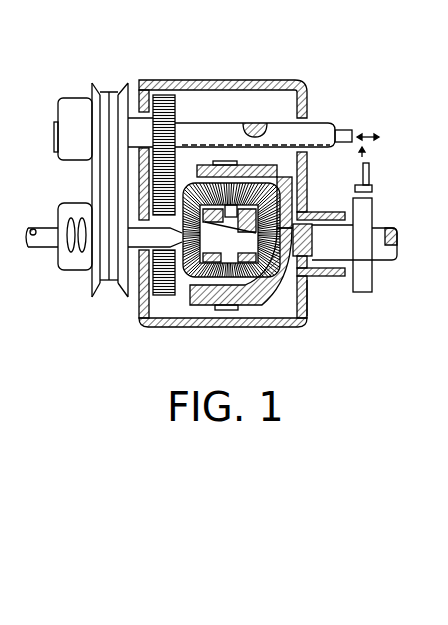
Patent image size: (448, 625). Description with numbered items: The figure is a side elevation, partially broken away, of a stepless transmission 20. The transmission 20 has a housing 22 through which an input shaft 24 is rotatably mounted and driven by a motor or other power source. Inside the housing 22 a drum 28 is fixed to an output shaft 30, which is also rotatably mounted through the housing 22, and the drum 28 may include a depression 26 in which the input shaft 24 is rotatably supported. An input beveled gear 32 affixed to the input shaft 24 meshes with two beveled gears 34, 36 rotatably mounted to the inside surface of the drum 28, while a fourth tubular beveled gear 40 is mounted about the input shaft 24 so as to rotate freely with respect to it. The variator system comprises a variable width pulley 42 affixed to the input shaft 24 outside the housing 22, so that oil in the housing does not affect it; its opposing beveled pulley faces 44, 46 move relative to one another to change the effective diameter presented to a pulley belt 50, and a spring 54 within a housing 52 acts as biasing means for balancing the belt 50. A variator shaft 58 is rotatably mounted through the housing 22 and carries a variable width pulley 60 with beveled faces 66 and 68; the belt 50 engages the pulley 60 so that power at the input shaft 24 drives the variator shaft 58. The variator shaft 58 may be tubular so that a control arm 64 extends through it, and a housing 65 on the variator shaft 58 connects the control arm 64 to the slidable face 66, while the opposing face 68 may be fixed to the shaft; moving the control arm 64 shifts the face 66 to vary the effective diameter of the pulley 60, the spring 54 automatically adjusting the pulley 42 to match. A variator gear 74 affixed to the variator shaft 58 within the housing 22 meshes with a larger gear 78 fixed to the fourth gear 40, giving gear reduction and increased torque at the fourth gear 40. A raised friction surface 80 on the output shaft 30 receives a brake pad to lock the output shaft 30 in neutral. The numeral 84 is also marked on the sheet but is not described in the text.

The transmission 20 is at (280, 77).
The housing 22 is at (167, 327).
The input shaft 24 is at (42, 235).
The depression 26 is at (302, 220).
The drum 28 is at (290, 297).
The output shaft 30 is at (385, 250).
The input beveled gear 32 is at (308, 274).
The beveled gear 34 is at (213, 312).
The beveled gear 36 is at (278, 178).
The fourth tubular beveled gear 40 is at (184, 292).
The variable width pulley 42 is at (92, 192).
The beveled pulley face 44 is at (100, 285).
The beveled pulley face 46 is at (116, 295).
The pulley belt 50 is at (112, 107).
The housing 52 is at (63, 262).
The spring 54 is at (72, 217).
The variator shaft 58 is at (320, 133).
The variable width pulley 60 is at (88, 88).
The control arm 64 is at (345, 130).
The housing 65 is at (57, 152).
The beveled face 66 is at (58, 102).
The beveled face 68 is at (123, 93).
The variator gear 74 is at (167, 113).
The gear 78 is at (162, 285).
The raised friction surface 80 is at (370, 173).
The element 84 is at (9, 430).